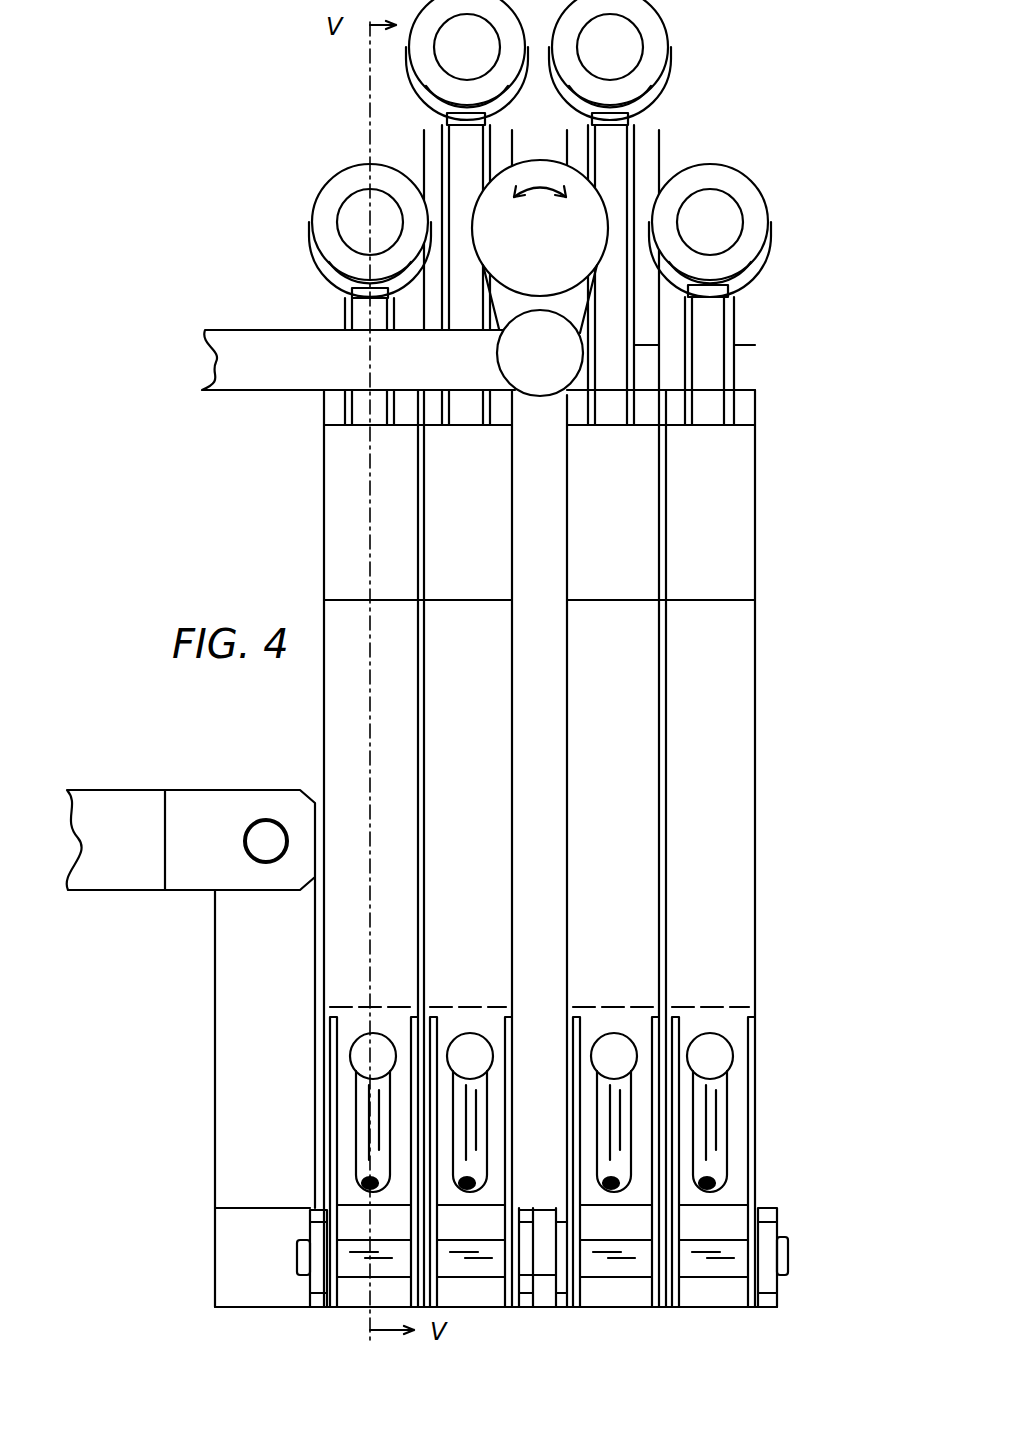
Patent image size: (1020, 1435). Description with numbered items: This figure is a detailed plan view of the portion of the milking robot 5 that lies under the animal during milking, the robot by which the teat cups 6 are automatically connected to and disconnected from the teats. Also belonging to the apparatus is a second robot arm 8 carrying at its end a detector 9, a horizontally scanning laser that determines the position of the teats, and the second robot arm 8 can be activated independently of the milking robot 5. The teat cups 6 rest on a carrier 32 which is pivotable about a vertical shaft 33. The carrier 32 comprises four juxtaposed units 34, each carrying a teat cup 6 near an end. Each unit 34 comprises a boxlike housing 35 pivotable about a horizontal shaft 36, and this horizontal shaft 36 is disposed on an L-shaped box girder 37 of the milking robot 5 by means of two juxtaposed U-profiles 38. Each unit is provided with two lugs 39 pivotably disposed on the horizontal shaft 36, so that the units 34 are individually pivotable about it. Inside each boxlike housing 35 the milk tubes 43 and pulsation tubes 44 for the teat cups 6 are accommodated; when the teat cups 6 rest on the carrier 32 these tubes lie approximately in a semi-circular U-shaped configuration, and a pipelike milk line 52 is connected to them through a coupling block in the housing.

The milking robot 5 is at (322, 496).
The teat cup 6 is at (423, 62).
The second robot arm 8 is at (233, 328).
The detector 9 is at (552, 258).
The carrier 32 is at (764, 478).
The vertical shaft 33 is at (255, 841).
The unit 34 is at (720, 788).
The boxlike housing 35 is at (640, 632).
The horizontal shaft 36 is at (297, 1256).
The L-shaped box girder 37 is at (222, 1040).
The U-profile 38 is at (312, 1283).
The lug 39 is at (492, 1017).
The milk tube 43 is at (632, 167).
The pulsation tube 44 is at (613, 150).
The pipelike milk line 52 is at (365, 1095).